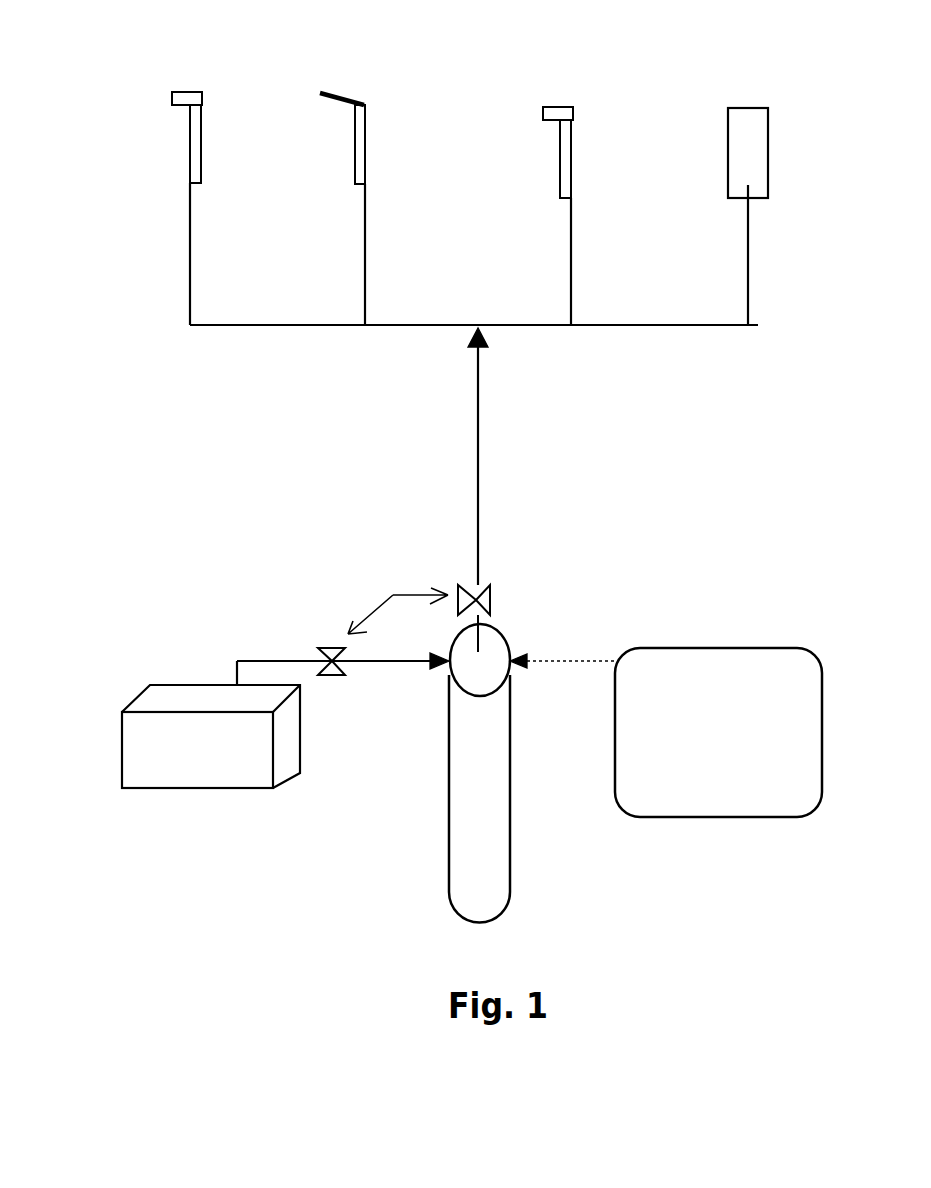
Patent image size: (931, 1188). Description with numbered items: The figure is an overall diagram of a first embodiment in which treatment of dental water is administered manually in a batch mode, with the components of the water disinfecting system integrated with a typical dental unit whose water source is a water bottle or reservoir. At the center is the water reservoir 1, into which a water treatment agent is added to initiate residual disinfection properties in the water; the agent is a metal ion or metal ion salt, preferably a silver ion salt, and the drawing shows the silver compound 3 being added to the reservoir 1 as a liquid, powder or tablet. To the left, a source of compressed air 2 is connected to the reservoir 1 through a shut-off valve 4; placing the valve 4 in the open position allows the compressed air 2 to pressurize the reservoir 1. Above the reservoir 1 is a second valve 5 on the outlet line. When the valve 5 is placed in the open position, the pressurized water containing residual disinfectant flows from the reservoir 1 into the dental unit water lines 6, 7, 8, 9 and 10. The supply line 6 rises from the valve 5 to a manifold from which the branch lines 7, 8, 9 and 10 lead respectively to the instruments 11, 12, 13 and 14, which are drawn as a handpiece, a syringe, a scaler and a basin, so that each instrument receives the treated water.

The water reservoir 1 is at (479, 773).
The compressed air 2 is at (211, 736).
The silver compound added as liquid, powder or tablet 3 is at (666, 732).
The valve 4 is at (343, 628).
The valve 5 is at (490, 618).
The dental unit water line 6 is at (490, 456).
The dental unit water line 7 is at (175, 254).
The dental unit water line 8 is at (348, 254).
The dental unit water line 9 is at (553, 261).
The dental unit water line 10 is at (720, 255).
The instrument 11 is at (131, 123).
The instrument 12 is at (324, 123).
The instrument 13 is at (533, 131).
The instrument 14 is at (725, 131).